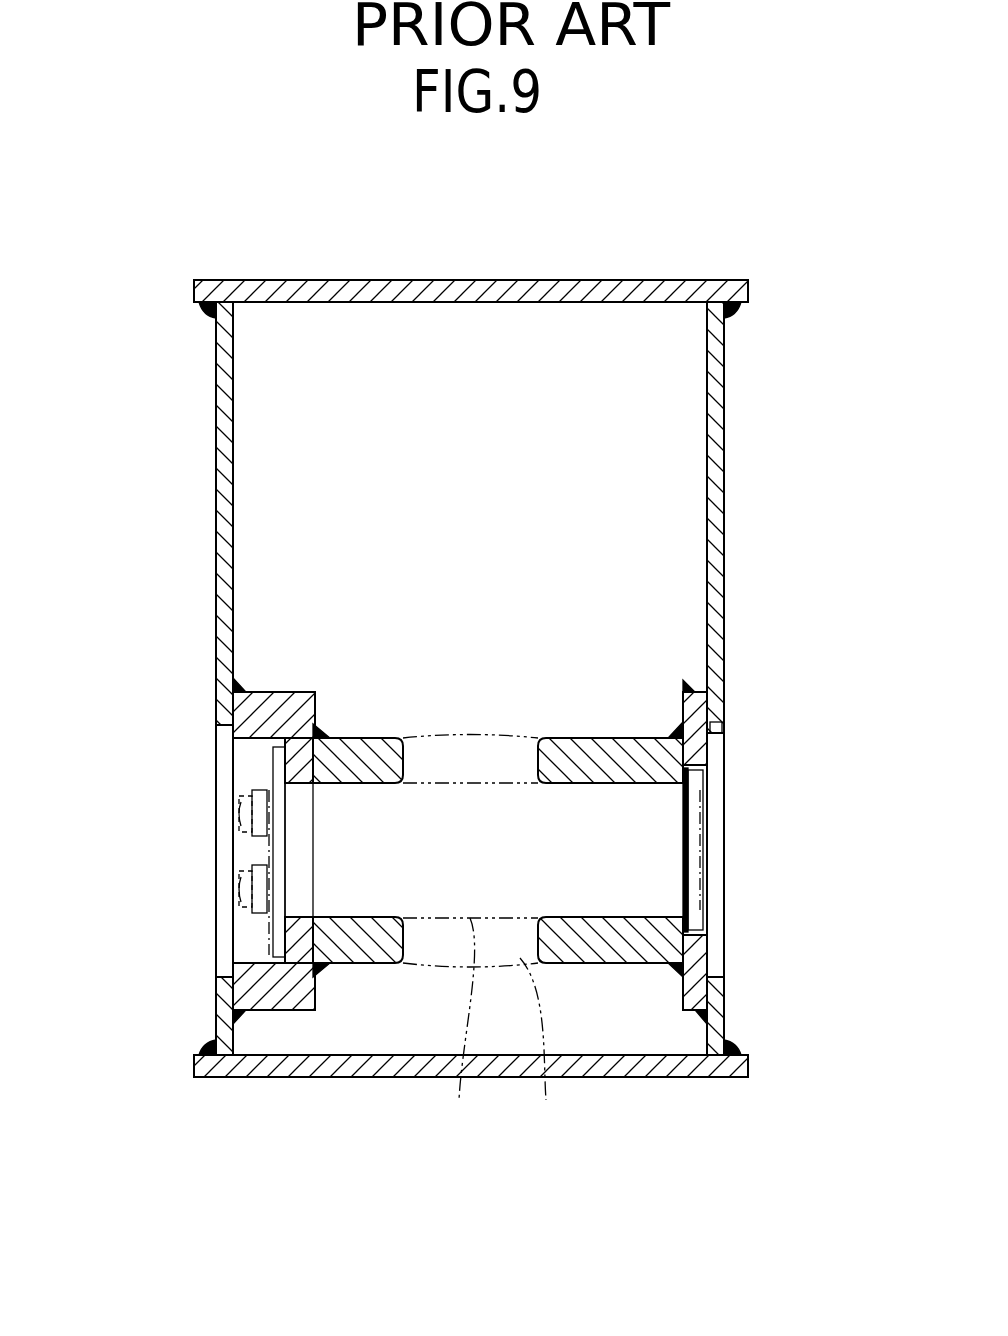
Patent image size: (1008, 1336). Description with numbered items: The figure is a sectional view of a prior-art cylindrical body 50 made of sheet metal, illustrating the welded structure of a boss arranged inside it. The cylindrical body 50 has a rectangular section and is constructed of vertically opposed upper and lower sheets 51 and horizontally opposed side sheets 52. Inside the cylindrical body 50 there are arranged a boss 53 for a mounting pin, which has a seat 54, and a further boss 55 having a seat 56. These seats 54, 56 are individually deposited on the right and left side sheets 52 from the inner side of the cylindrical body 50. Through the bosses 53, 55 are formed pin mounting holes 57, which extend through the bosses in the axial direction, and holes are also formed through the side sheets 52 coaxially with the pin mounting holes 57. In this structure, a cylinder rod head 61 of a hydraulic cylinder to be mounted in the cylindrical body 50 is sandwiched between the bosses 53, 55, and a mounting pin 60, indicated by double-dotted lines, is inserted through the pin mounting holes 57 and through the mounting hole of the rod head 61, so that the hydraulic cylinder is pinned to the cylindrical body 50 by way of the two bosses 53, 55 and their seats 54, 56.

The cylindrical body 50 is at (606, 260).
The upper and lower sheets 51 is at (412, 280).
The side sheets 52 is at (215, 492).
The boss 53 is at (613, 738).
The seat 54 is at (713, 733).
The boss 55 is at (343, 738).
The seat 56 is at (253, 713).
The pin mounting holes 57 is at (357, 918).
The mounting pin 60 is at (459, 1100).
The cylinder rod head 61 is at (546, 1100).